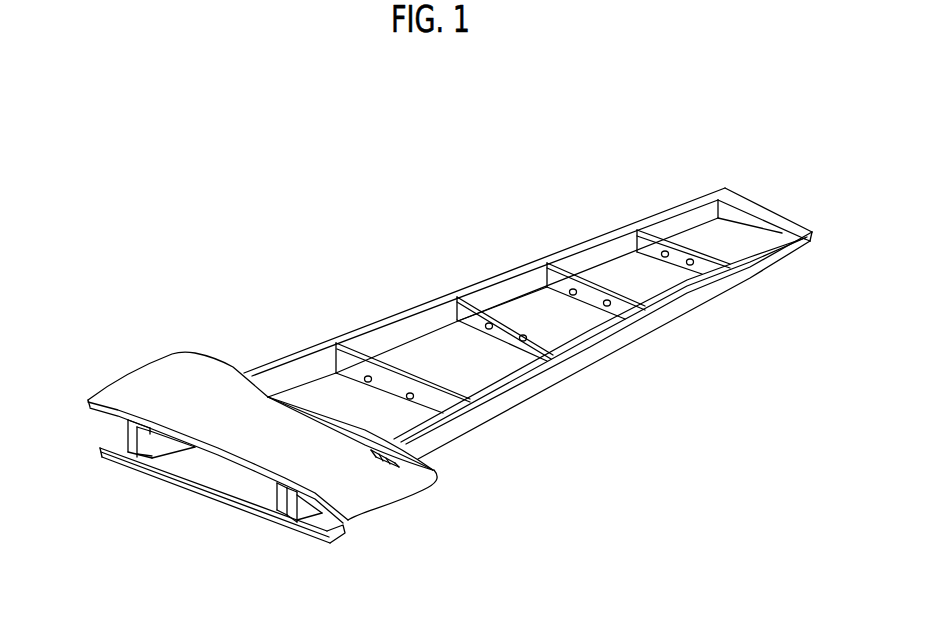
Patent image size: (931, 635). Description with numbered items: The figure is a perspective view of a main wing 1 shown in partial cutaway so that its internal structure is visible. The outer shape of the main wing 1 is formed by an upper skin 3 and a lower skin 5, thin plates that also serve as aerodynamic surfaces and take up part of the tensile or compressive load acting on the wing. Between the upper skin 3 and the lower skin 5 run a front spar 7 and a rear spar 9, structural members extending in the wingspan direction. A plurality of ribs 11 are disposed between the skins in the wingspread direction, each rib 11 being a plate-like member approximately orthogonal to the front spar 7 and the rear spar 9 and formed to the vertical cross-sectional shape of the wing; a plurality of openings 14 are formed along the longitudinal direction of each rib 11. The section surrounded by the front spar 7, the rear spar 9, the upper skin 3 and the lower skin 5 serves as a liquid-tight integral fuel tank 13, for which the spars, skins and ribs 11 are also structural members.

The main wing 1 is at (265, 176).
The upper skin 3 is at (157, 385).
The lower skin 5 is at (215, 498).
The front spar 7 is at (383, 318).
The rear spar 9 is at (530, 376).
The rib 11 is at (604, 277).
The fuel tank 13 is at (574, 321).
The opening 14 is at (497, 331).